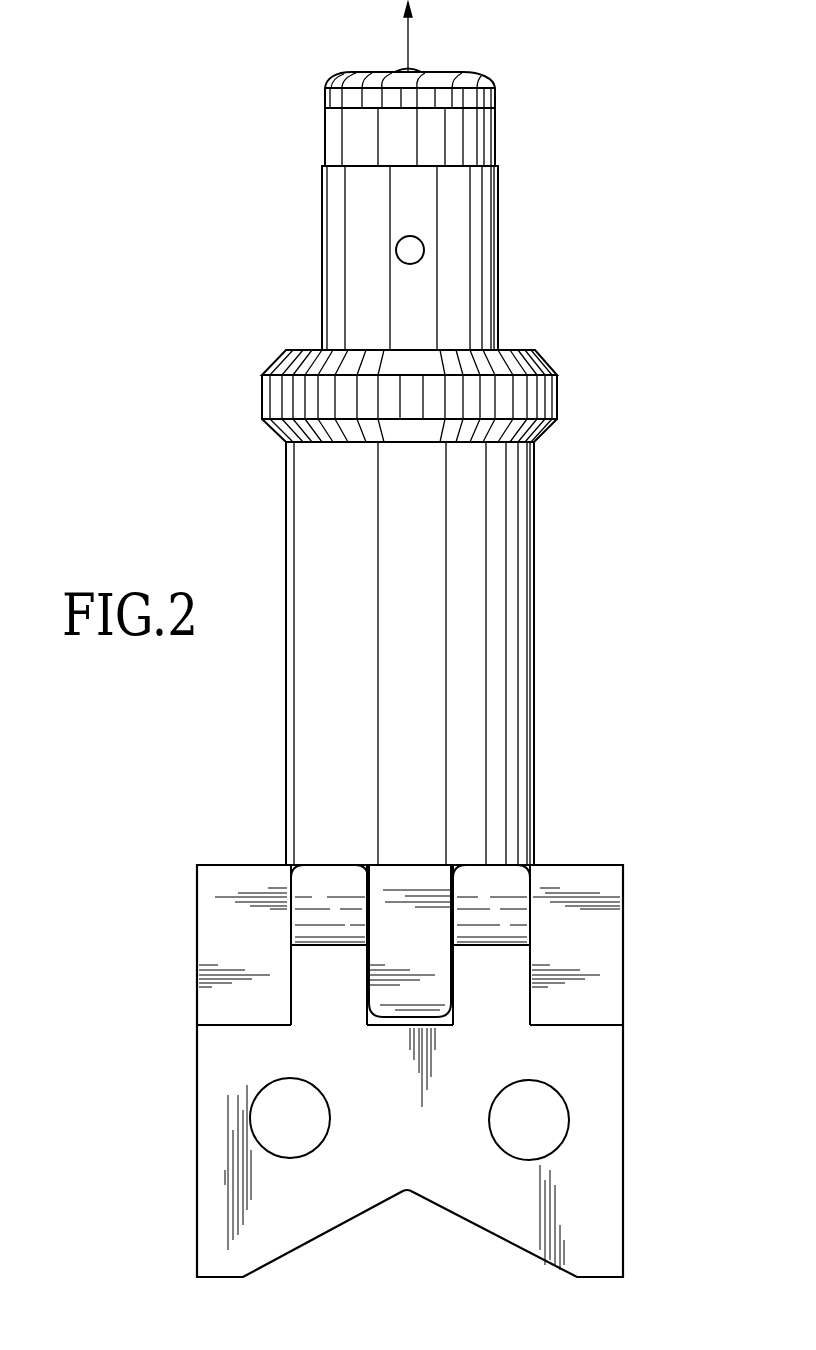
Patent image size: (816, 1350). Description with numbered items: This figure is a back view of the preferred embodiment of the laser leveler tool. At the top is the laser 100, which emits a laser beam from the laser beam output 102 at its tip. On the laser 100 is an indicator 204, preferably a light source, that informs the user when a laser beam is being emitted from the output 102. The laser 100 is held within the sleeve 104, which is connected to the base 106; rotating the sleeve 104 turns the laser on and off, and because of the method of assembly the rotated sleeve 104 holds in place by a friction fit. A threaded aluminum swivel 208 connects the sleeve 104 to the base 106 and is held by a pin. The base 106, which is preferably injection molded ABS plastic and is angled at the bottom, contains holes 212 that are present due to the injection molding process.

The laser 100 is at (322, 245).
The laser beam output 102 is at (402, 70).
The sleeve 104 is at (535, 618).
The base 106 is at (197, 1045).
The indicator 204 is at (410, 250).
The threaded aluminum swivel 208 is at (393, 1019).
The holes 212 is at (570, 1120).